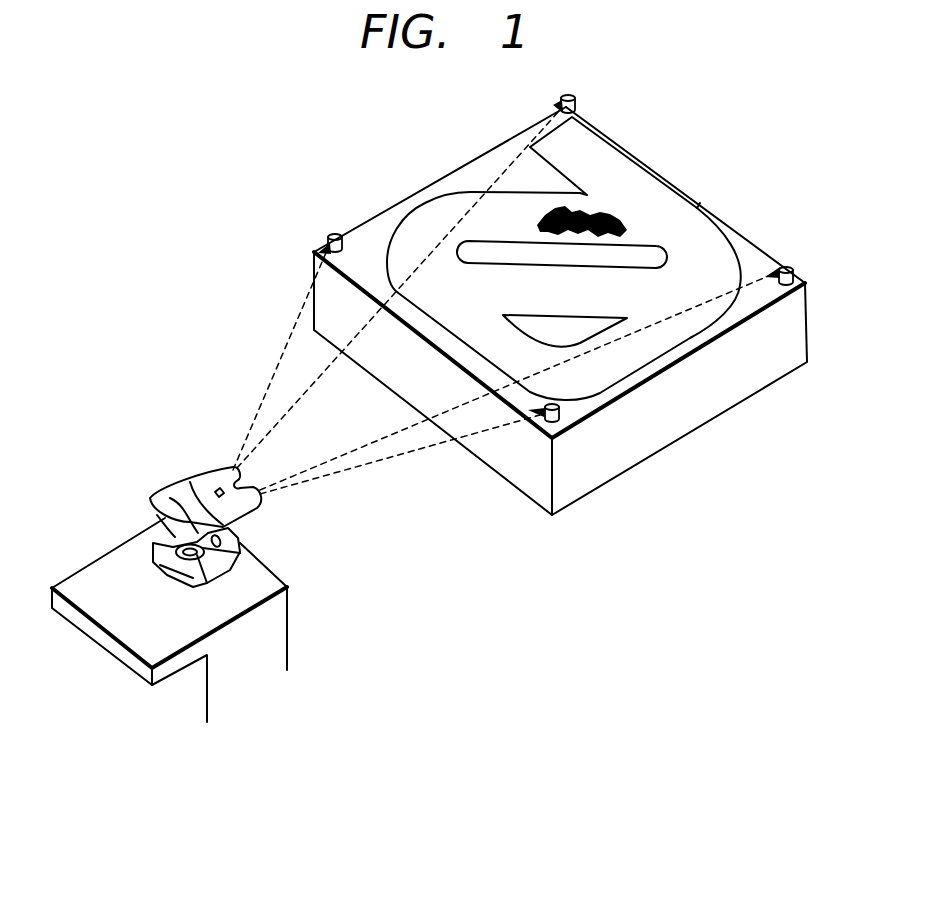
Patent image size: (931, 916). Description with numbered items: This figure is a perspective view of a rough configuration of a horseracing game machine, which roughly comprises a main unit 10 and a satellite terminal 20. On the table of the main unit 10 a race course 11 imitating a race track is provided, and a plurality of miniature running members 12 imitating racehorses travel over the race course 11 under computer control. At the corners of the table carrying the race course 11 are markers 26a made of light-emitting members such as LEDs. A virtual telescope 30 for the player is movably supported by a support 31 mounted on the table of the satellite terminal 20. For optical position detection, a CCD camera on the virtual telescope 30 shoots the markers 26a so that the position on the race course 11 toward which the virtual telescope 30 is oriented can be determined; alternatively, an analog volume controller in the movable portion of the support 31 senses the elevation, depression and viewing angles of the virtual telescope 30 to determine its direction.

The main unit 10 is at (447, 174).
The race course 11 is at (703, 207).
The miniature running members 12 is at (610, 218).
The markers 26a is at (790, 264).
The virtual telescope 30 is at (197, 479).
The support 31 is at (243, 540).
The satellite terminal 20 is at (288, 647).